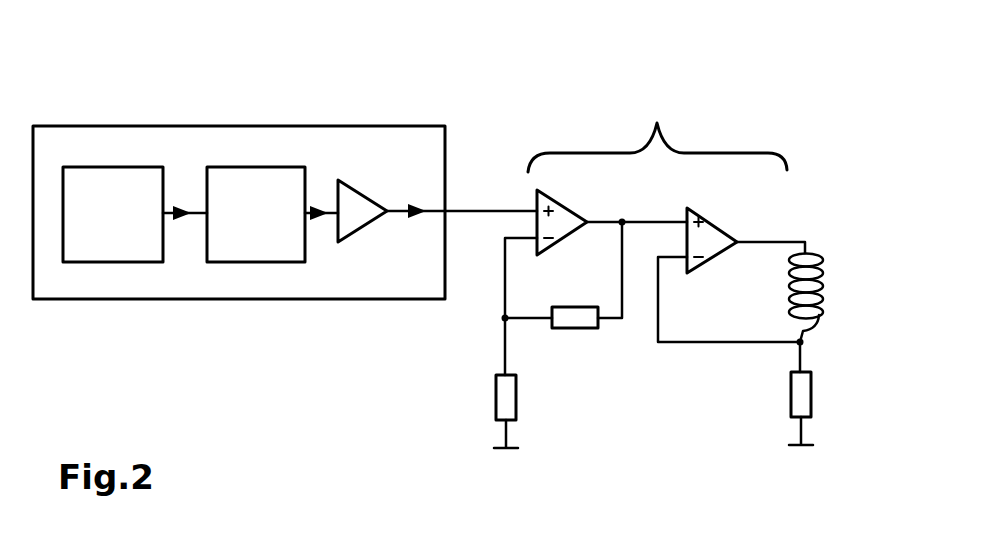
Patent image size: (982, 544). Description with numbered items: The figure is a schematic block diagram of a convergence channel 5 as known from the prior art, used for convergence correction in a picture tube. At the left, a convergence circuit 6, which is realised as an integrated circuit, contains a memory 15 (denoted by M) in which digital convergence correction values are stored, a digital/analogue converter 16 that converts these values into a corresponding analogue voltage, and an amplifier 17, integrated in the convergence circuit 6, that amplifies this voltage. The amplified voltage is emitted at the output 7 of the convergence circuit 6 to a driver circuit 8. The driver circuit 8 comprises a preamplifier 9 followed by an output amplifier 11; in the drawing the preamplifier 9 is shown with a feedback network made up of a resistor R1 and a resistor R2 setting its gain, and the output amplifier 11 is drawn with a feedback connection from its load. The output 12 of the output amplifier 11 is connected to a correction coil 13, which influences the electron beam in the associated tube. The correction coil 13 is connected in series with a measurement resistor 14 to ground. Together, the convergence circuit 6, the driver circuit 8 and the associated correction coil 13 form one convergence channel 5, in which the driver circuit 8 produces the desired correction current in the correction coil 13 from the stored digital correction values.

The convergence channel 5 is at (784, 113).
The convergence circuit 6 is at (190, 299).
The output 7 is at (460, 210).
The driver circuit 8 is at (657, 123).
The preamplifier 9 is at (572, 208).
The output amplifier 11 is at (718, 225).
The output 12 is at (739, 240).
The correction coil 13 is at (826, 297).
The measurement resistor 14 is at (812, 388).
The memory 15 is at (105, 167).
The digital/analogue converter 16 is at (263, 167).
The amplifier 17 is at (370, 197).
The resistor R1 is at (486, 397).
The resistor R2 is at (575, 299).